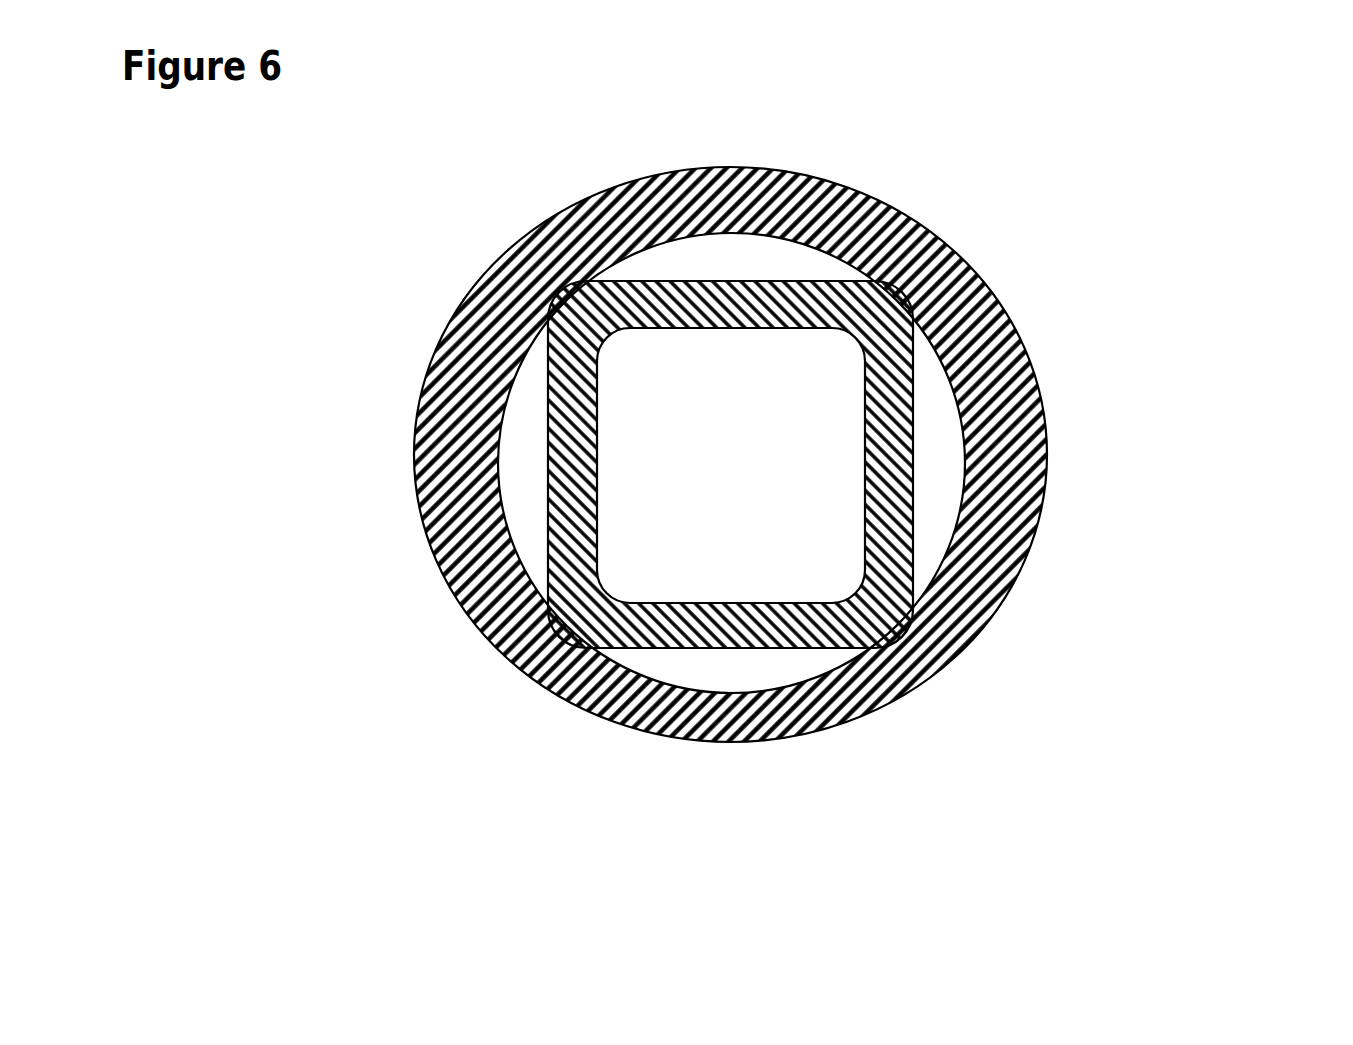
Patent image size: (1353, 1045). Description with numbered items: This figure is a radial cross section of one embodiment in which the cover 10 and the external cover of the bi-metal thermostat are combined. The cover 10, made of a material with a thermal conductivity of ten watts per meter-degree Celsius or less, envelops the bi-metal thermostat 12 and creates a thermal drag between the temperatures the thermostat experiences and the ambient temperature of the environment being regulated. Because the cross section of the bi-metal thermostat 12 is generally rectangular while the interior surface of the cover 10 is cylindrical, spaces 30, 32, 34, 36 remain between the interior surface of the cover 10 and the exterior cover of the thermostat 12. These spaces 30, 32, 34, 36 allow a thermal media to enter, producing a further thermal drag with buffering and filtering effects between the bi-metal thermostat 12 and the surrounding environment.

The cover 10 is at (740, 500).
The bi-metal thermostat 12 is at (523, 373).
The space 30 is at (488, 465).
The space 32 is at (752, 247).
The space 34 is at (728, 688).
The space 36 is at (952, 427).